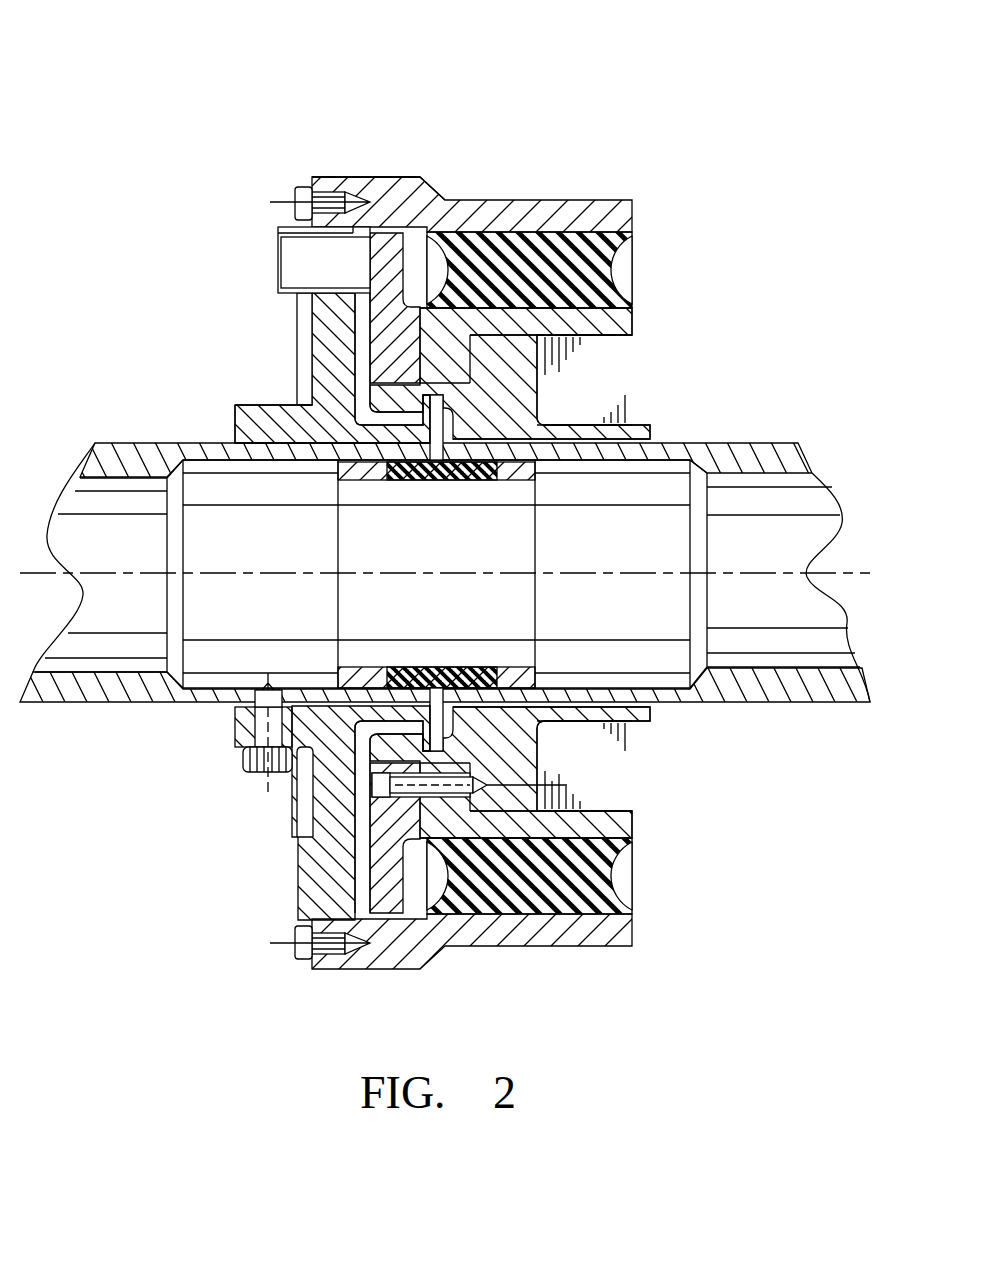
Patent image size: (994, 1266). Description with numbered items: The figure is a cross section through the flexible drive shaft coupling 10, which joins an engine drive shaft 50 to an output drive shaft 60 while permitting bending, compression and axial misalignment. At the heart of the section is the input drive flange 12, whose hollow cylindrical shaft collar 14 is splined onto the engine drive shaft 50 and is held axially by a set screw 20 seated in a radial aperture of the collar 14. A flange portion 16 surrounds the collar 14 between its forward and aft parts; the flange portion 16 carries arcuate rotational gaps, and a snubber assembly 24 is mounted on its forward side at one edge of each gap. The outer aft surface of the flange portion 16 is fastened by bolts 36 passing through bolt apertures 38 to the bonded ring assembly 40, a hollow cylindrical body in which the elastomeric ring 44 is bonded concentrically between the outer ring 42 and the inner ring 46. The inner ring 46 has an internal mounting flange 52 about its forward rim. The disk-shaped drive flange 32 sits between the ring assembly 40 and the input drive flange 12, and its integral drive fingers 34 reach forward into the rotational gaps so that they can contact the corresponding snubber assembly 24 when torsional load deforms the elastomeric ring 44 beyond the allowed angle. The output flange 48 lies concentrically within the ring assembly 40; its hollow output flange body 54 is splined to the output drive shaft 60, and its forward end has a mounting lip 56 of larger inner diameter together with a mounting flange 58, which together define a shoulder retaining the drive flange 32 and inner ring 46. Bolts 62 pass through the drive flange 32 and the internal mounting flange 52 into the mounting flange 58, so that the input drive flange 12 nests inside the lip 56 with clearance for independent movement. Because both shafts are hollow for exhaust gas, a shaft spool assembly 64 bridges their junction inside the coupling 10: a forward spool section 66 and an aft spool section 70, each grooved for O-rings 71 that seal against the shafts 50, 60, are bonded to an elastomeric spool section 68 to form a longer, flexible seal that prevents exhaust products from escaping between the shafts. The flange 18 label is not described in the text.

The flexible drive shaft coupling 10 is at (696, 127).
The input drive flange 12 is at (300, 383).
The shaft collar 14 is at (233, 405).
The flange portion 16 is at (298, 298).
The flange 18 is at (235, 414).
The set screw 20 is at (268, 776).
The snubber assembly 24 is at (277, 291).
The drive flange 32 is at (383, 283).
The drive fingers 34 is at (303, 256).
The bolts 36 is at (303, 186).
The bolt apertures 38 is at (313, 958).
The bonded ring assembly 40 is at (386, 177).
The outer ring 42 is at (556, 200).
The elastomeric ring 44 is at (634, 280).
The inner ring 46 is at (634, 322).
The output flange 48 is at (651, 431).
The engine drive shaft 50 is at (135, 444).
The internal mounting flange 52 is at (450, 337).
The output flange body 54 is at (690, 706).
The mounting lip 56 is at (303, 405).
The mounting flange 58 is at (545, 342).
The output drive shaft 60 is at (777, 485).
The bolts 62 is at (372, 785).
The shaft spool assembly 64 is at (492, 503).
The forward spool section 66 is at (357, 688).
The elastomeric spool section 68 is at (422, 664).
The aft spool section 70 is at (646, 720).
The O-rings 71 is at (347, 688).